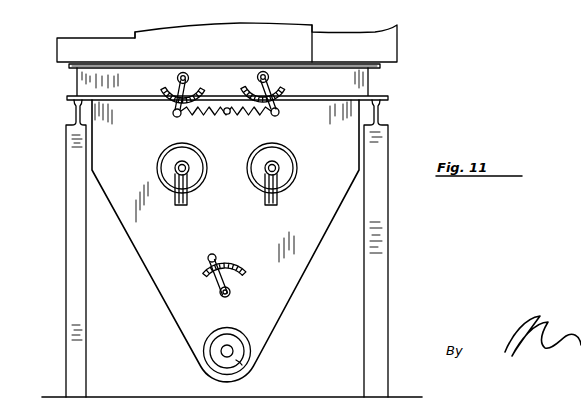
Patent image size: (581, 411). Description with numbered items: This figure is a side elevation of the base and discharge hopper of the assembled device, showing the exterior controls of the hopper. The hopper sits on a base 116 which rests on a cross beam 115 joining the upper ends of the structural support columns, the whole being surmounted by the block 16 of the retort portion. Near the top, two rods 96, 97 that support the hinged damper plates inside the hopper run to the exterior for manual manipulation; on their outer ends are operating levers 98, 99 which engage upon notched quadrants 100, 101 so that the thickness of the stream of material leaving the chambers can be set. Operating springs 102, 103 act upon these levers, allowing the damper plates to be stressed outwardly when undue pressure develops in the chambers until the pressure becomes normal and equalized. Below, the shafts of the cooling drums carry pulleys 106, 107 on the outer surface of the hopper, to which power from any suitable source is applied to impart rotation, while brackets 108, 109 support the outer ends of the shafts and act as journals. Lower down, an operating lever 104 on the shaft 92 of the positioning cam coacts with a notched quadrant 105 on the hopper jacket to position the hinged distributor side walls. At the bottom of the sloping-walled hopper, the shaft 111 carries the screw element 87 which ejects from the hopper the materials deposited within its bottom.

The hopper block 16 is at (165, 33).
The notched quadrant 100 is at (315, 65).
The cross beam 115 is at (75, 115).
The base 116 is at (360, 88).
The notched quadrant 101 is at (187, 73).
The operating lever 99 is at (188, 84).
The rod 97 is at (260, 52).
The rod 96 is at (267, 70).
The operating spring 102 is at (248, 113).
The operating lever 98 is at (285, 92).
The operating spring 103 is at (200, 118).
The pulley 107 is at (170, 160).
The bracket 108 is at (175, 203).
The pulley 106 is at (292, 163).
The bracket 109 is at (282, 188).
The notched quadrant 105 is at (230, 262).
The operating lever 104 is at (217, 285).
The shaft 92 is at (232, 293).
The shaft 111 is at (233, 352).
The screw element 87 is at (277, 360).